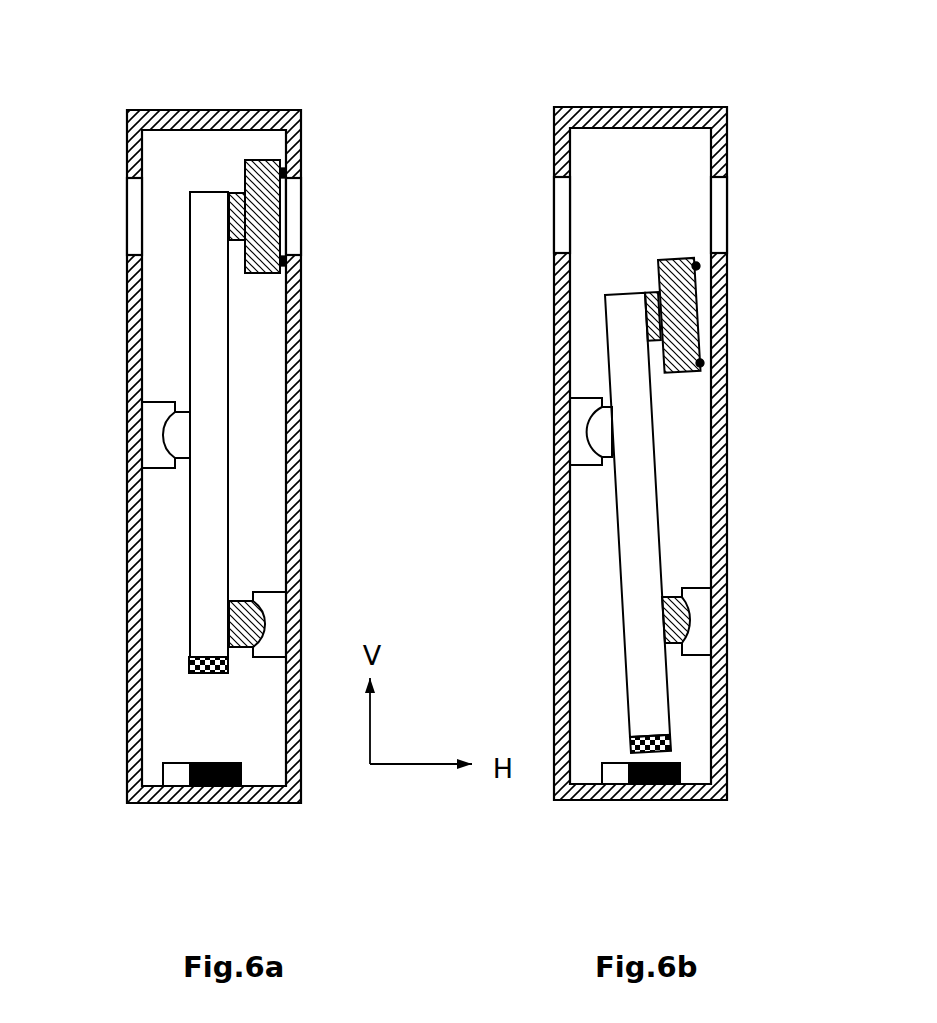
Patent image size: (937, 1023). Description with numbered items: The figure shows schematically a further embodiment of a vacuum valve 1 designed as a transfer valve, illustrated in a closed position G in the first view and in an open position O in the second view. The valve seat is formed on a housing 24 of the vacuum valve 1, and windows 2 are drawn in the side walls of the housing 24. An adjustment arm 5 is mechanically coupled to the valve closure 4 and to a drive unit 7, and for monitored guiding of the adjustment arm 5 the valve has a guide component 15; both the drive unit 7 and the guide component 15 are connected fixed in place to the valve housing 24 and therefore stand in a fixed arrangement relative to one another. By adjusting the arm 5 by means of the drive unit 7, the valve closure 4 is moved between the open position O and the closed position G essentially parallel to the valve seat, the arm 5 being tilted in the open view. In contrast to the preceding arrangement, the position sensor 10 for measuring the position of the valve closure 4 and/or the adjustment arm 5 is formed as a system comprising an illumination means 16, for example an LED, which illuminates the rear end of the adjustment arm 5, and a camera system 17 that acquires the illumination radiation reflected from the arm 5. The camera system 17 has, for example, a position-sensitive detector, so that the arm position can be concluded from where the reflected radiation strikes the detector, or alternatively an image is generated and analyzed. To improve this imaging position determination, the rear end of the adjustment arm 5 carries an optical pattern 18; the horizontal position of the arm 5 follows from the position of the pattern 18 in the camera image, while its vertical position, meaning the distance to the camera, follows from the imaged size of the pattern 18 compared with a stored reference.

In FIG. 6A, the vacuum valve 1 is at (115, 50).
In FIG. 6B, the vacuum valve 1 is at (555, 50).
In FIG. 6A, the window 2 is at (137, 222).
In FIG. 6B, the window 2 is at (493, 240).
In FIG. 6A, the valve closure 4 is at (265, 227).
In FIG. 6B, the valve closure 4 is at (683, 322).
In FIG. 6A, the adjustment arm 5 is at (222, 537).
In FIG. 6B, the adjustment arm 5 is at (620, 508).
In FIG. 6A, the drive unit 7 is at (272, 637).
In FIG. 6B, the drive unit 7 is at (703, 613).
In FIG. 6A, the position sensor 10 is at (172, 708).
In FIG. 6B, the position sensor 10 is at (597, 707).
In FIG. 6A, the guide component 15 is at (212, 429).
In FIG. 6B, the guide component 15 is at (538, 416).
In FIG. 6A, the illumination means 16 is at (175, 772).
In FIG. 6B, the illumination means 16 is at (610, 772).
In FIG. 6A, the camera system 17 is at (232, 787).
In FIG. 6B, the camera system 17 is at (672, 787).
In FIG. 6A, the optical pattern 18 is at (220, 662).
In FIG. 6B, the optical pattern 18 is at (670, 750).
In FIG. 6A, the valve housing 24 is at (290, 140).
In FIG. 6B, the valve housing 24 is at (554, 110).
In FIG. 6A, the closed position G is at (247, 100).
In FIG. 6B, the open position O is at (687, 98).